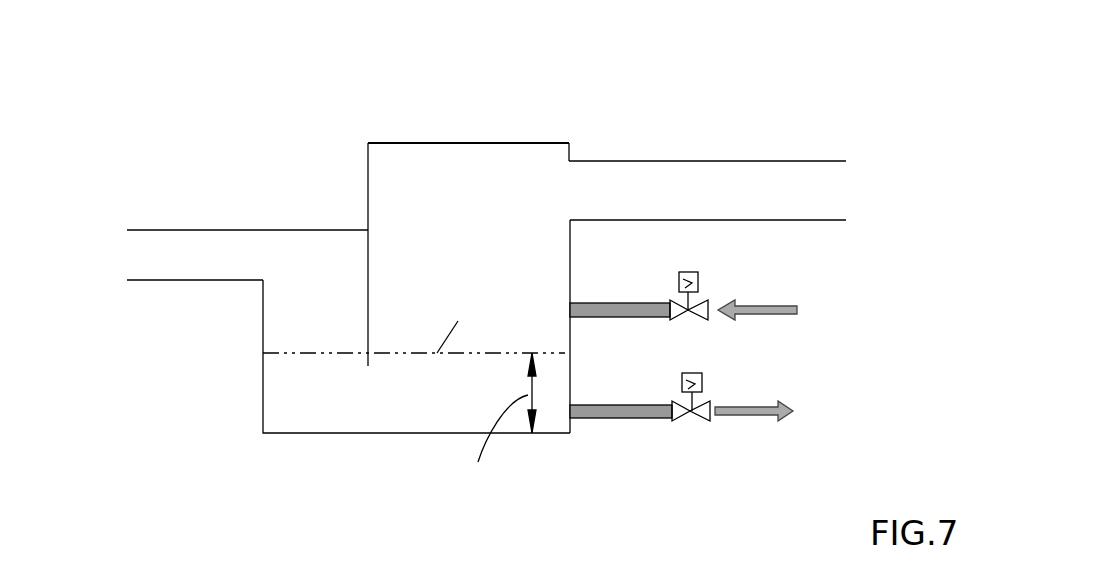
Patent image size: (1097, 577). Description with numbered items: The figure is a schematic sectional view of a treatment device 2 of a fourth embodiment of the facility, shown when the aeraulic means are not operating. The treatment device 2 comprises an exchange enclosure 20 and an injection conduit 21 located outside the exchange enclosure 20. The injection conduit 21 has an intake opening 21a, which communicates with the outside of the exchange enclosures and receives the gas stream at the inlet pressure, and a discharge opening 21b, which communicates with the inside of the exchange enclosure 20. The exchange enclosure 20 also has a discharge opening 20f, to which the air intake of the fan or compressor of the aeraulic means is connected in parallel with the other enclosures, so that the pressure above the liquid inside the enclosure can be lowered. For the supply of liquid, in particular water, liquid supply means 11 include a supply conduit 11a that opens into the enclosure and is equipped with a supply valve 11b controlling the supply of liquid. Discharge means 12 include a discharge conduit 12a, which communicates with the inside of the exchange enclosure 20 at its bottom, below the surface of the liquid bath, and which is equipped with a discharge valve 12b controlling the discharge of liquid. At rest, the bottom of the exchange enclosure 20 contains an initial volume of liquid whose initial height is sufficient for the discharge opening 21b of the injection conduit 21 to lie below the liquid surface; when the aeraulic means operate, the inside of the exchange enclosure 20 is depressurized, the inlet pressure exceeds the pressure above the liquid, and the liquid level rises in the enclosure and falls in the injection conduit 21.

The treatment device 2 is at (518, 121).
The exchange enclosure 20 is at (412, 169).
The discharge opening 20f is at (558, 190).
The injection conduit 21 is at (260, 229).
The intake opening 21a is at (163, 256).
The discharge opening of the injection conduit 21b is at (338, 415).
The liquid supply means 11 is at (722, 289).
The supply conduit 11a is at (622, 306).
The supply valve 11b is at (702, 324).
The discharge means 12 is at (714, 437).
The discharge conduit 12a is at (605, 415).
The discharge valve 12b is at (678, 422).